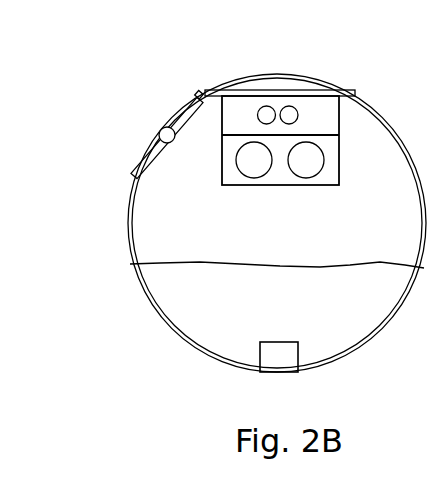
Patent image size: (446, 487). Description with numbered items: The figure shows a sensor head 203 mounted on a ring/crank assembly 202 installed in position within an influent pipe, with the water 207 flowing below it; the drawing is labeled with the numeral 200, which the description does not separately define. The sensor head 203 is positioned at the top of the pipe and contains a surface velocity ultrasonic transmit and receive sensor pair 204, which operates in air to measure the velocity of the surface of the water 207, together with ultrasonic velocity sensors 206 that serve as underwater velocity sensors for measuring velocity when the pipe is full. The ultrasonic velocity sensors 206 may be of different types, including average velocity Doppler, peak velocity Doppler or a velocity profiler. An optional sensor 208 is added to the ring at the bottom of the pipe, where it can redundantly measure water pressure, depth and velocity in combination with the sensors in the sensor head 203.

The tank 200 is at (120, 197).
The ring/crank assembly 202 is at (159, 128).
The sensor head 203 is at (233, 112).
The surface velocity ultrasonic transmit and receive sensor pair 204 is at (305, 165).
The ultrasonic velocity sensors 206 is at (270, 117).
The water 207 is at (172, 259).
The optional sensor 208 is at (277, 351).